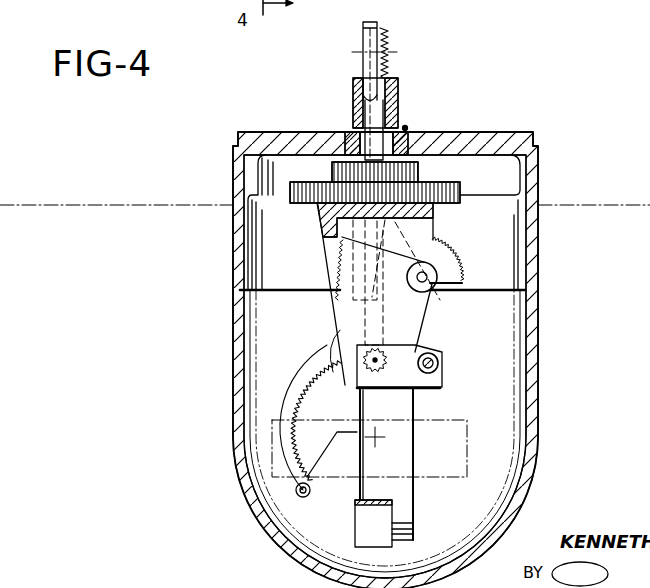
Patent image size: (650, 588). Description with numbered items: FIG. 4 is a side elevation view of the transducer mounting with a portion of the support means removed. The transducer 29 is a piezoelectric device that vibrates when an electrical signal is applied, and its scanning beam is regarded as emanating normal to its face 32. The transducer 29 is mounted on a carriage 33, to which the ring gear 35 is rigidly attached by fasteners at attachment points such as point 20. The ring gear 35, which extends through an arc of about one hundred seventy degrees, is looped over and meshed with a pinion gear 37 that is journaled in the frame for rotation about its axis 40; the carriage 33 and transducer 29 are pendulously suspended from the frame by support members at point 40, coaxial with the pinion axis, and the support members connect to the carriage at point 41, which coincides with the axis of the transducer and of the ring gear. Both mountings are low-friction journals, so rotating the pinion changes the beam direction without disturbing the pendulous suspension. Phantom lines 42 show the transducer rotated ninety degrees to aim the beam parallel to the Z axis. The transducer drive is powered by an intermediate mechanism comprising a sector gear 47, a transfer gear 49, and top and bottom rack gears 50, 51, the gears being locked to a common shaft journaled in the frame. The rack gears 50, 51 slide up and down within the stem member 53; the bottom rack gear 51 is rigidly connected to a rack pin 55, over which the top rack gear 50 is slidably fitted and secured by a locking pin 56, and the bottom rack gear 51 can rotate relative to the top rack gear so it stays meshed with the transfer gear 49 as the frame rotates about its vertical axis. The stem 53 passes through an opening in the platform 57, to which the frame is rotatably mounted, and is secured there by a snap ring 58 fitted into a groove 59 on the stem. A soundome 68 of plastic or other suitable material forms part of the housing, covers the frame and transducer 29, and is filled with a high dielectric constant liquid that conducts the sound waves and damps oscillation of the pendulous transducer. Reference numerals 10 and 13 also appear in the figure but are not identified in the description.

The pivot pin 10 is at (297, 492).
The drive gear 13 is at (447, 187).
The attachment point 20 is at (442, 367).
The transducer 29 is at (398, 538).
The face 32 is at (414, 512).
The carriage 33 is at (330, 493).
The ring gear 35 is at (305, 375).
The pinion gear 37 is at (442, 352).
The axis 40 is at (385, 423).
The point 41 is at (385, 433).
The phantom lines 42 is at (467, 440).
The sector gear 47 is at (427, 312).
The transfer gear 49 is at (450, 243).
The top rack gear 50 is at (386, 41).
The bottom rack gear 51 is at (396, 282).
The stem member 53 is at (353, 105).
The rack pin 55 is at (375, 23).
The locking pin 56 is at (363, 32).
The platform 57 is at (530, 193).
The snap ring 58 is at (407, 128).
The groove 59 is at (400, 127).
The soundome 68 is at (537, 463).